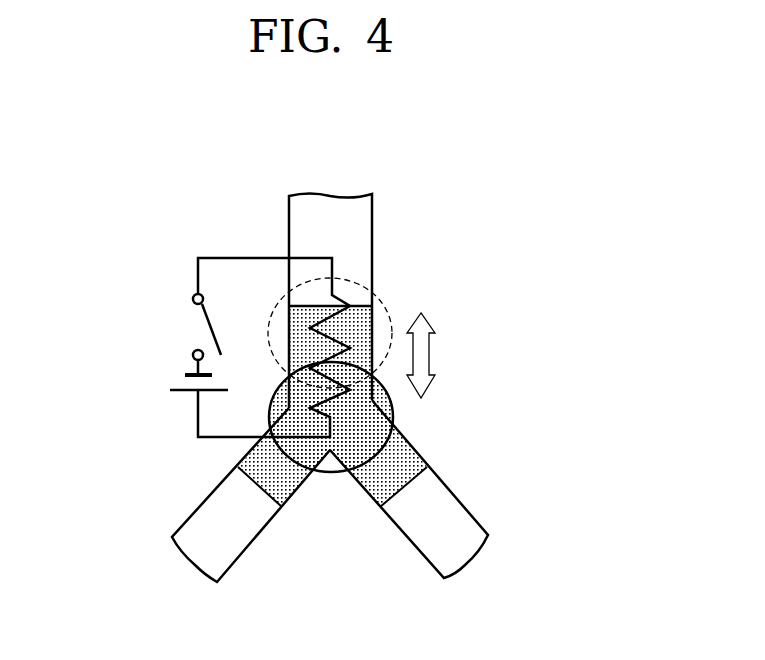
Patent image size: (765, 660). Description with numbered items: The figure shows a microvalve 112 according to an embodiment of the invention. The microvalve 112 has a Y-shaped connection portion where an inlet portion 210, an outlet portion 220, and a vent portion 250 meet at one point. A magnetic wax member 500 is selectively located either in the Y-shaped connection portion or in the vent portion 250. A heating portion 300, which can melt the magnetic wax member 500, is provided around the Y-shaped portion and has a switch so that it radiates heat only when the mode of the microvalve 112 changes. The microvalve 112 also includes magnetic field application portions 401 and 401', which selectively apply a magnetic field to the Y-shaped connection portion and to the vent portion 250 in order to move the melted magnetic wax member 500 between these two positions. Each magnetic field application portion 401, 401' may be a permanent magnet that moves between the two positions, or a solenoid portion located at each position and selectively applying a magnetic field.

The microvalve 112 is at (518, 238).
The inlet portion 210 is at (172, 538).
The outlet portion 220 is at (487, 527).
The vent portion 250 is at (372, 222).
The heating portion 300 is at (217, 250).
The magnetic field application portion 401 is at (383, 417).
The magnetic field application portion 401' is at (371, 327).
The magnetic wax member 500 is at (400, 457).